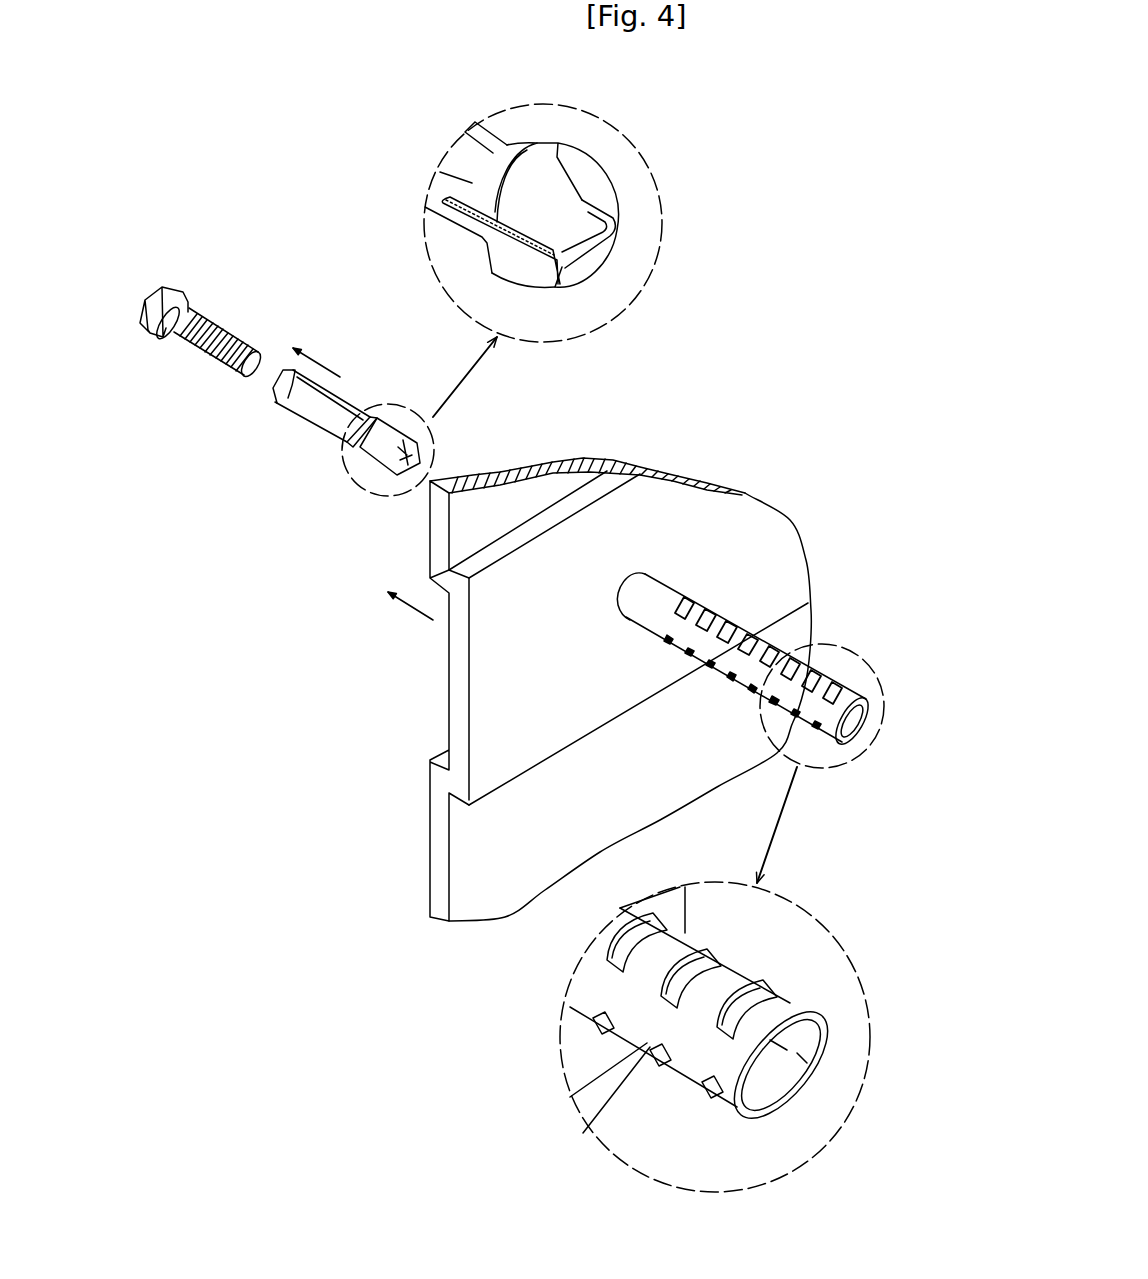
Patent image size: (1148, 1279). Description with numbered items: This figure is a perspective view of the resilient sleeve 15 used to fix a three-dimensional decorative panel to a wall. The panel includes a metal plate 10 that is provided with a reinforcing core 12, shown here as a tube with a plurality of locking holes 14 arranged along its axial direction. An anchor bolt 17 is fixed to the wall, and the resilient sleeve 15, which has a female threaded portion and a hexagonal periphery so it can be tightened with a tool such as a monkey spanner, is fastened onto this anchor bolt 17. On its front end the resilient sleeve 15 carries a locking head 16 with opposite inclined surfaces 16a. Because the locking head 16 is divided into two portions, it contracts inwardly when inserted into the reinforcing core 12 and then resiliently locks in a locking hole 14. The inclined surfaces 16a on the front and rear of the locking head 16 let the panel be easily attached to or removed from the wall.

The metal plate 10 is at (458, 686).
The reinforcing core 12 is at (722, 844).
The locking hole 14 is at (752, 990).
The resilient sleeve 15 is at (482, 271).
The locking head 16 is at (554, 261).
The inclined surface 16a is at (530, 145).
The anchor bolt 17 is at (237, 328).